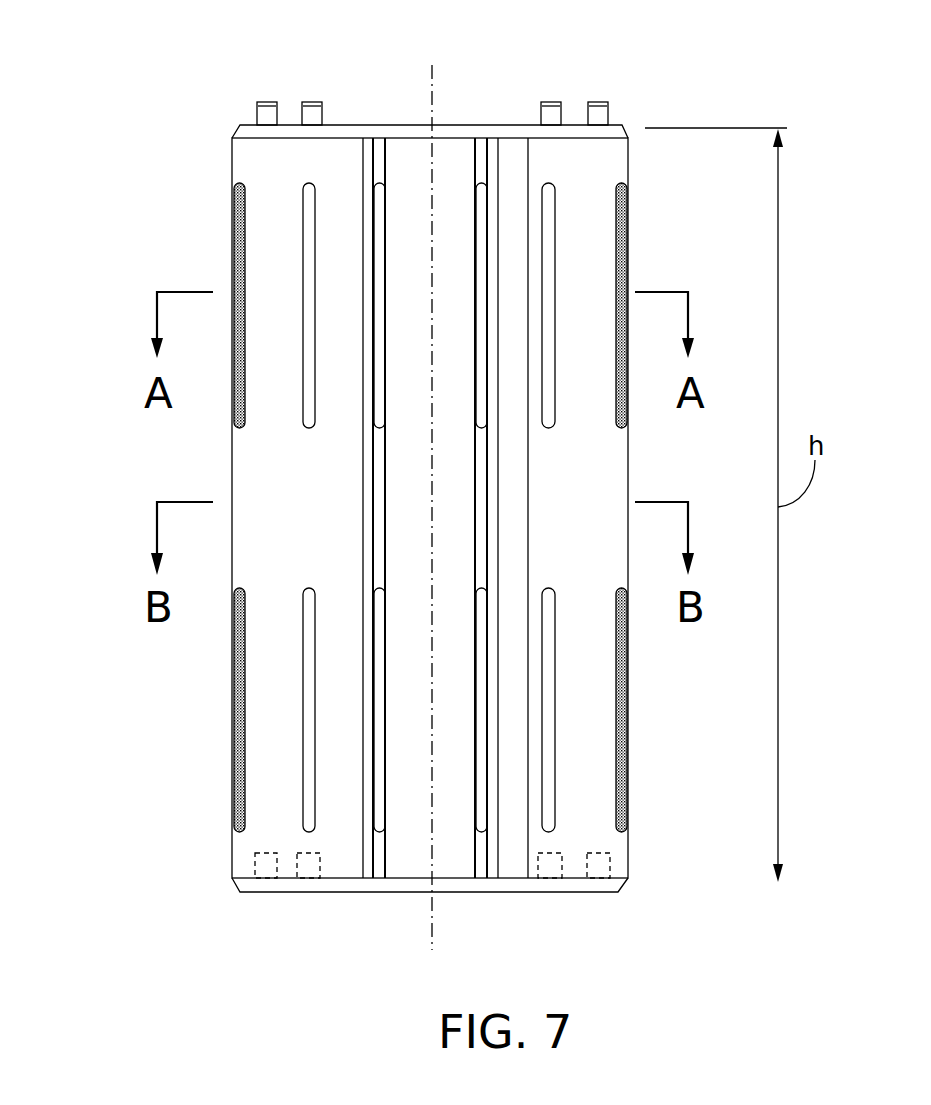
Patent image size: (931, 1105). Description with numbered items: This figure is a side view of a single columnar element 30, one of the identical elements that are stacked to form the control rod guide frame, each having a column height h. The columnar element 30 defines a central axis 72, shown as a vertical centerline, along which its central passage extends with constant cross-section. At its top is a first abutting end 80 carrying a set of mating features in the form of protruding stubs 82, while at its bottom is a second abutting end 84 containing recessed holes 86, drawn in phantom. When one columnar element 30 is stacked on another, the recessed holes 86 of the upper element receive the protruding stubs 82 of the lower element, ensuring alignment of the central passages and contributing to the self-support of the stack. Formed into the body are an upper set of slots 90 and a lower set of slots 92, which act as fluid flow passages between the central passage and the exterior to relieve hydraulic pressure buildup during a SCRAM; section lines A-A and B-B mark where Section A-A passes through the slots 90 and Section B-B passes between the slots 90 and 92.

The columnar element 30 is at (172, 86).
The central axis 72 is at (432, 106).
The first (upper) abutting end 80 is at (387, 126).
The protruding stubs 82 is at (548, 100).
The second (lower) abutting end 84 is at (387, 893).
The recessed holes 86 is at (546, 870).
The upper set of slots 90 is at (312, 235).
The lower set of slots 92 is at (308, 778).